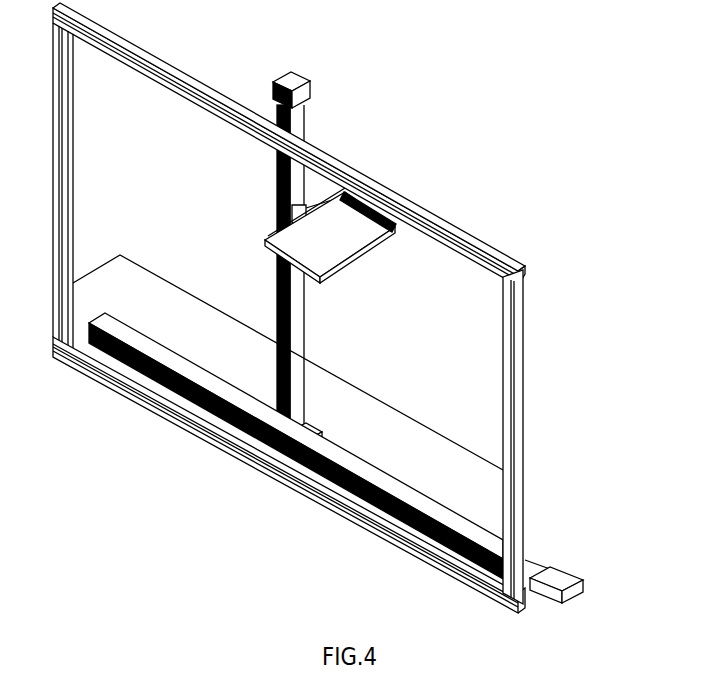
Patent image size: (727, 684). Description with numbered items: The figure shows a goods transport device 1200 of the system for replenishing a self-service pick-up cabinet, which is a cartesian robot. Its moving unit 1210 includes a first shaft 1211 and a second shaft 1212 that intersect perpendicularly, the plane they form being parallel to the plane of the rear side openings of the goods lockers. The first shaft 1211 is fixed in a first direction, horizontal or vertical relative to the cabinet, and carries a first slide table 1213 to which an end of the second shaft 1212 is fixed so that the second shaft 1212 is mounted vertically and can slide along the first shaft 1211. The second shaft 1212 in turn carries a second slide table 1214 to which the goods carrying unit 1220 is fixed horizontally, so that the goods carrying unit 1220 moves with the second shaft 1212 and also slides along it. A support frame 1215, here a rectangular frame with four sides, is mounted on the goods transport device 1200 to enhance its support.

The goods transport device 1200 is at (355, 108).
The moving unit 1210 is at (213, 238).
The first shaft 1211 is at (383, 476).
The second shaft 1212 is at (300, 330).
The first slide table 1213 is at (318, 428).
The second slide table 1214 is at (278, 205).
The support frame 1215 is at (522, 337).
The goods carrying unit 1220 is at (370, 217).